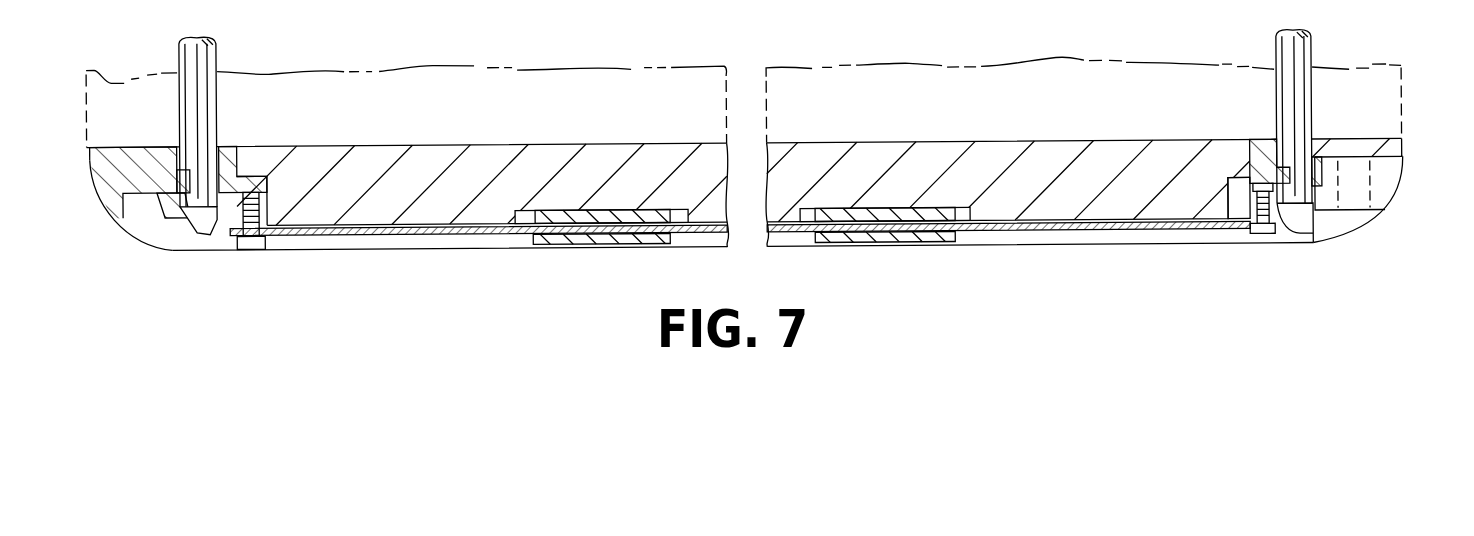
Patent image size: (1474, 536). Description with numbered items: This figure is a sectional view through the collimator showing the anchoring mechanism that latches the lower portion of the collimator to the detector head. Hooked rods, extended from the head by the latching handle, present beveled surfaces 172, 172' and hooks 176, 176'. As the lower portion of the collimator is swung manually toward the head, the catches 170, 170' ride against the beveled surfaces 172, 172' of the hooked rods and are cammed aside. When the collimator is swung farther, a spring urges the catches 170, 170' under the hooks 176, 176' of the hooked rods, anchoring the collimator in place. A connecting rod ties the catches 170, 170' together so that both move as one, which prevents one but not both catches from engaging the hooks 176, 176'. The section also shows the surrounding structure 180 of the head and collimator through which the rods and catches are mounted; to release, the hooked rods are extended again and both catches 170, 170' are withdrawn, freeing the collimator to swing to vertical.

The catch 170 is at (1246, 140).
The catch 170' is at (169, 205).
The beveled surface 172 is at (1349, 228).
The beveled surface 172' is at (243, 251).
The hook 176 is at (1319, 233).
The hook 176' is at (198, 245).
The end block 180 is at (1387, 175).